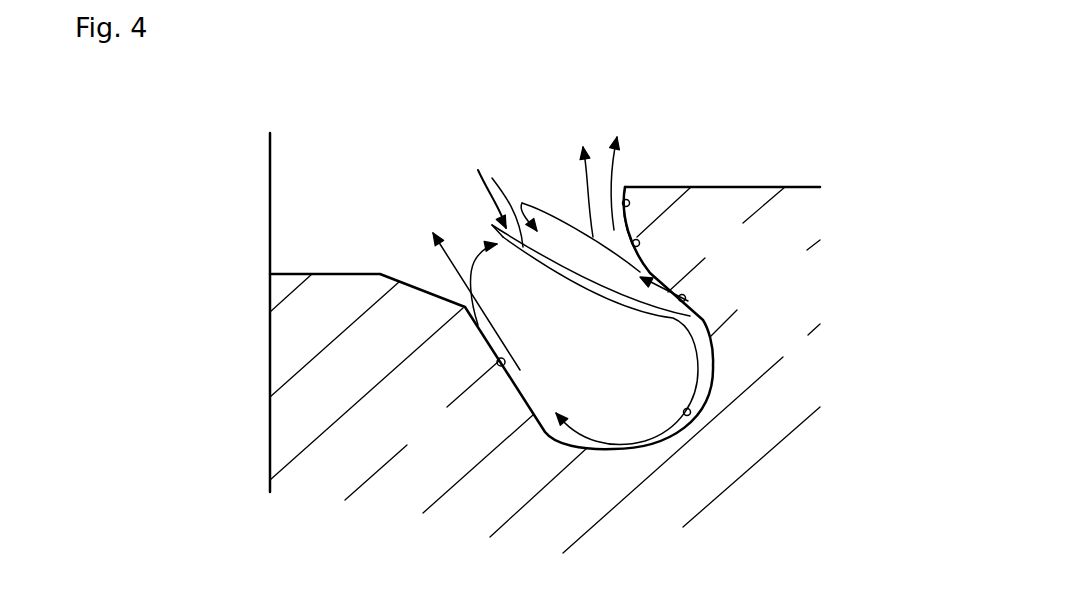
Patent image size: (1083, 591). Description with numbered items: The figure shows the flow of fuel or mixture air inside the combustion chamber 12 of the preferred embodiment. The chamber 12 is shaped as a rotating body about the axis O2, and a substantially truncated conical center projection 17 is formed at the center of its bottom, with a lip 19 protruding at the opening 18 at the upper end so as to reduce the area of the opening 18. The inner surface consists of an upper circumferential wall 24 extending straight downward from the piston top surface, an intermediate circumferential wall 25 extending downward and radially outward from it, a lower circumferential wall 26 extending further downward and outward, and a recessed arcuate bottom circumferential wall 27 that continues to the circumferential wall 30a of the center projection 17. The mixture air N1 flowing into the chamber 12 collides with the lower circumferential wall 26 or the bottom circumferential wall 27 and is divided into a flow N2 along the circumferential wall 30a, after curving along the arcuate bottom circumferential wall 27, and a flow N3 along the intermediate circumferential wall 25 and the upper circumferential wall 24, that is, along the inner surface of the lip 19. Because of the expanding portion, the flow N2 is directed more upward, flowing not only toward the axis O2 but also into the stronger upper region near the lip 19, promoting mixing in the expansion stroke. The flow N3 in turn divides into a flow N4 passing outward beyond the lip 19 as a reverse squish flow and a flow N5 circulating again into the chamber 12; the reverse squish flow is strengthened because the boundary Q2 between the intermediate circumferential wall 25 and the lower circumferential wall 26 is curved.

The combustion chamber 12 is at (392, 170).
The axis O2 is at (268, 186).
The center projection 17 is at (285, 330).
The opening 18 is at (625, 190).
The lip 19 is at (670, 197).
The upper circumferential wall 24 is at (630, 203).
The intermediate circumferential wall 25 is at (640, 243).
The lower circumferential wall 26 is at (686, 298).
The bottom circumferential wall 27 is at (690, 415).
The circumferential wall of the center projection 30a is at (497, 365).
The mixture air N1 is at (569, 228).
The flow along the circumferential wall of the center projection N2 is at (478, 325).
The flow along the intermediate and upper circumferential walls N3 is at (692, 303).
The reverse squish flow N4 is at (605, 248).
The circulating flow N5 is at (522, 203).
The boundary Q2 is at (648, 270).